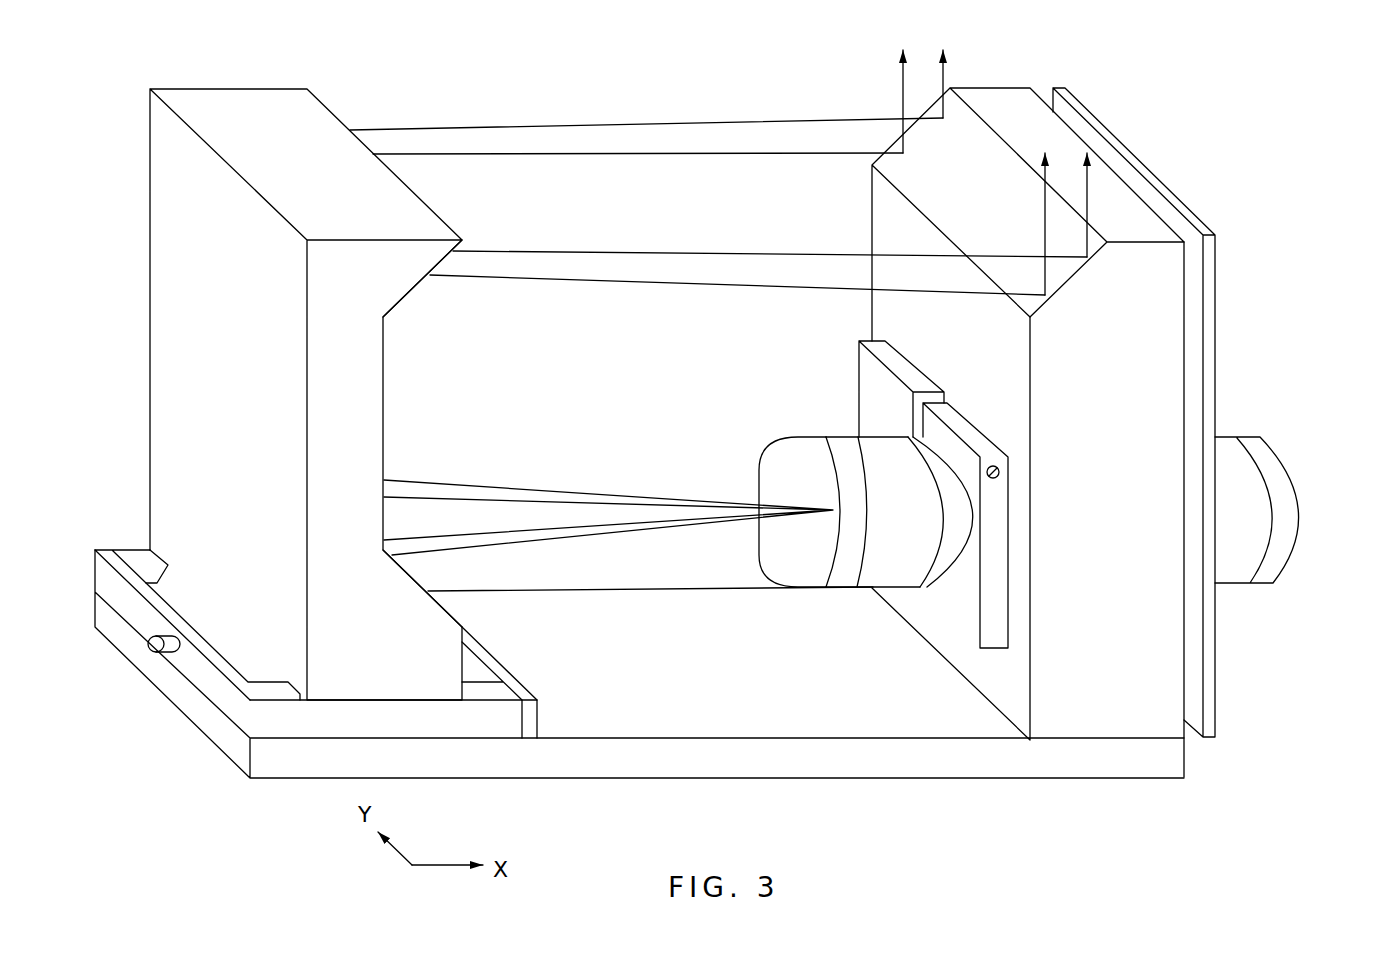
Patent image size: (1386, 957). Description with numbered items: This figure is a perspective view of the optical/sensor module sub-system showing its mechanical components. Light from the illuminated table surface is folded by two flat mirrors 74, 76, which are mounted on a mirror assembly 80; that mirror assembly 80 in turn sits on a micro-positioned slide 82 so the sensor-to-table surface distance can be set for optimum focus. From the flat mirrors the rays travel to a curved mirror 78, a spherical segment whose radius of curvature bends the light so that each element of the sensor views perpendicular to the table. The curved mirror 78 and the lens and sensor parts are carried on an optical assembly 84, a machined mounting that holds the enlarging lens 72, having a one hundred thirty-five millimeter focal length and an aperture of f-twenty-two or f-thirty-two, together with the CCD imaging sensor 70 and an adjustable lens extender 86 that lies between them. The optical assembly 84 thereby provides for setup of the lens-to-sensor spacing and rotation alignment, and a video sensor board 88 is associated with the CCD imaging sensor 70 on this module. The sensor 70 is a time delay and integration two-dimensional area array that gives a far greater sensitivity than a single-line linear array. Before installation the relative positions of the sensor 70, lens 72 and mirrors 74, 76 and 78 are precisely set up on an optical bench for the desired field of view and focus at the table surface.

The CCD imaging sensor array 70 is at (1287, 467).
The enlarging lens 72 is at (792, 532).
The flat mirror 74 is at (425, 582).
The flat mirror 76 is at (408, 293).
The curved mirror 78 is at (1013, 223).
The mirror assembly 80 is at (380, 672).
The micro-positioned slide 82 is at (272, 722).
The optical assembly 84 is at (1103, 702).
The adjustable lens extender 86 is at (908, 527).
The video sensor board 88 is at (1208, 657).